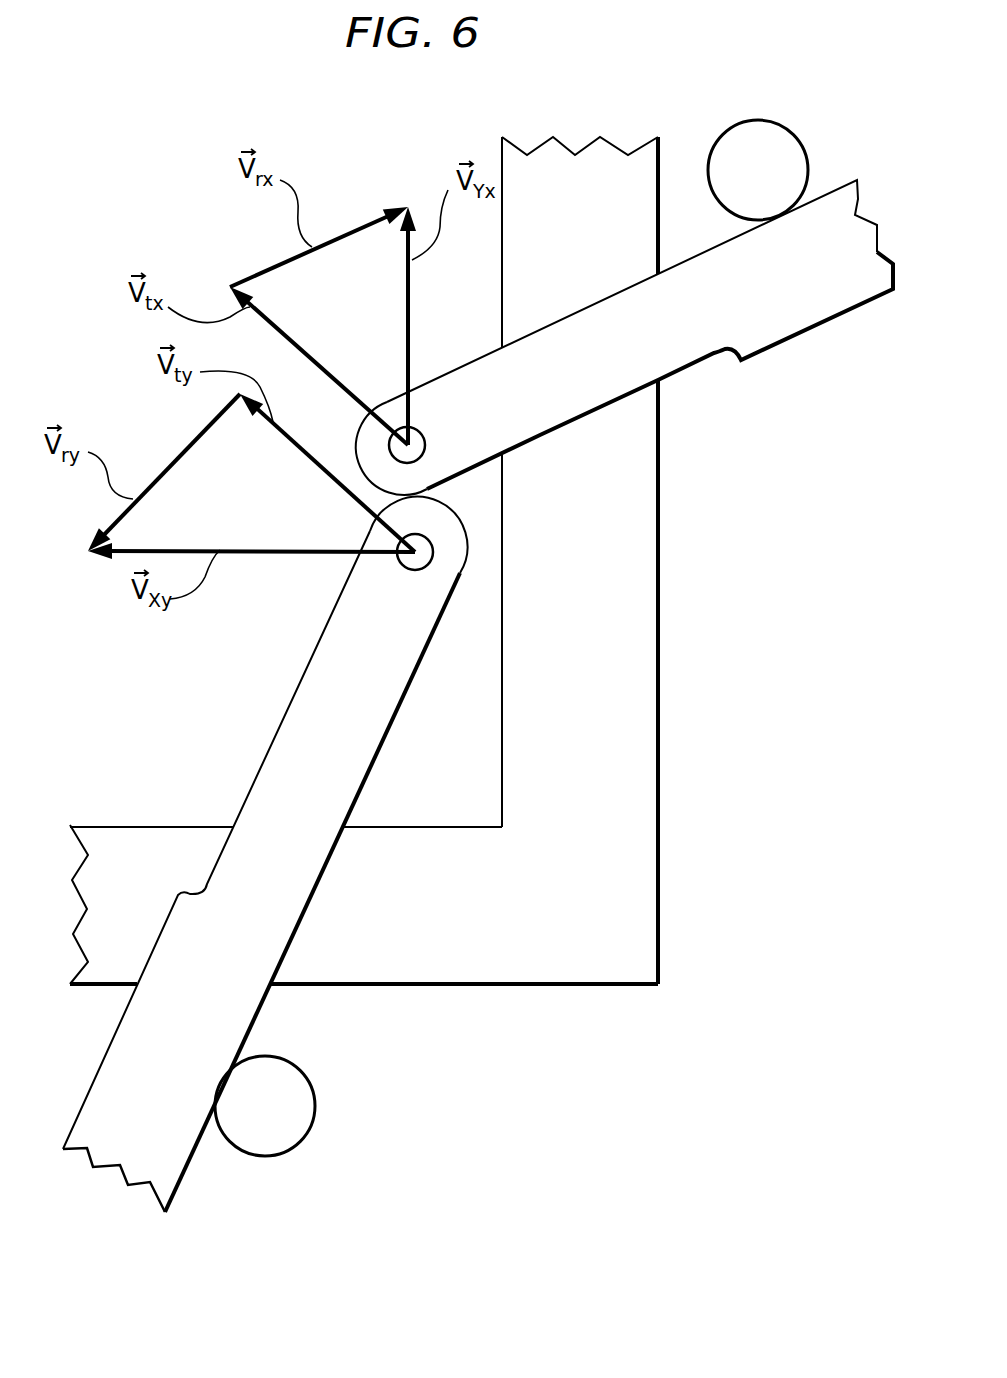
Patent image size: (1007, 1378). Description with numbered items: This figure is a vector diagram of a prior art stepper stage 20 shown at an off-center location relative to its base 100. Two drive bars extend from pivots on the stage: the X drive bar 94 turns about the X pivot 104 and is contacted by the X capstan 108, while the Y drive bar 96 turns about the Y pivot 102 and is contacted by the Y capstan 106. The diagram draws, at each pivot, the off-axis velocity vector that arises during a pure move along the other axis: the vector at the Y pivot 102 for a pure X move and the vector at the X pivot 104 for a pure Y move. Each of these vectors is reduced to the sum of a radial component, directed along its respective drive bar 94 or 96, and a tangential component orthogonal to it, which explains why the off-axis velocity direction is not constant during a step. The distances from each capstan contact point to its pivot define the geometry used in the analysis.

The stage 20 is at (455, 828).
The drive bar 94 is at (752, 355).
The drive bar 96 is at (295, 925).
The base 100 is at (660, 932).
The Y pivot 102 is at (433, 548).
The X pivot 104 is at (427, 437).
The Y capstan 106 is at (307, 1072).
The X capstan 108 is at (767, 117).